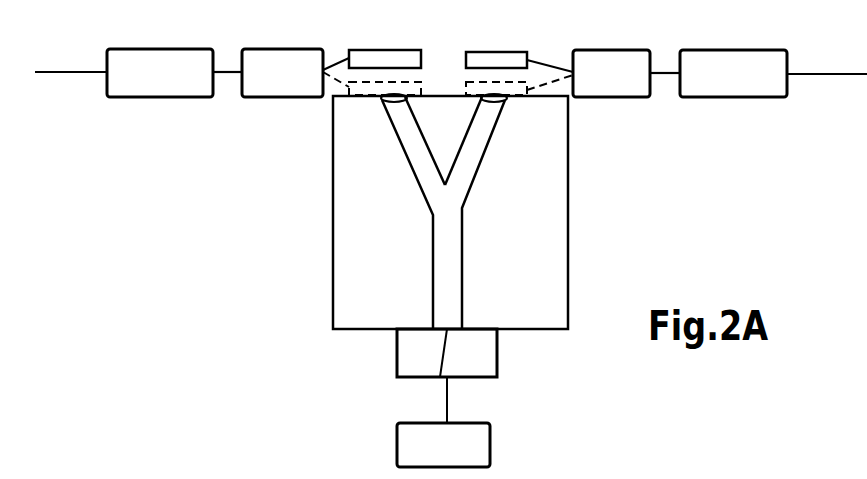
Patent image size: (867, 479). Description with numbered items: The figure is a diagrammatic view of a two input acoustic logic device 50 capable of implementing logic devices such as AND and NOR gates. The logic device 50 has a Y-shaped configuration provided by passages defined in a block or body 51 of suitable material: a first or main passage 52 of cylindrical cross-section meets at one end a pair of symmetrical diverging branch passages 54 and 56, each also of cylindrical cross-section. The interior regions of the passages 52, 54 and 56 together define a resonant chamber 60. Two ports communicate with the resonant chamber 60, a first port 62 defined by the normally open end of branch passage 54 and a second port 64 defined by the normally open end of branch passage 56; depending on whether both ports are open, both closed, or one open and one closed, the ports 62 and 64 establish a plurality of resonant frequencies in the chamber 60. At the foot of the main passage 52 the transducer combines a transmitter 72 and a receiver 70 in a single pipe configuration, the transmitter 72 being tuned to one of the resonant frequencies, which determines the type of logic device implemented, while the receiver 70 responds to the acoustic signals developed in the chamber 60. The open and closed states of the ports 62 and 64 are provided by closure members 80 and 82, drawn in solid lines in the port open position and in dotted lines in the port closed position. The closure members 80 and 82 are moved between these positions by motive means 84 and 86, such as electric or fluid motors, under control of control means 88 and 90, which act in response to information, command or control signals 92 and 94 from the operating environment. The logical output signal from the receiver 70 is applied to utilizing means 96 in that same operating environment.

The logic device 50 is at (202, 250).
The block or body 51 is at (333, 308).
The first or main passage 52 is at (462, 270).
The branch passage 54 is at (408, 162).
The branch passage 56 is at (487, 158).
The resonant chamber 60 is at (450, 213).
The first port 62 is at (387, 103).
The second port 64 is at (505, 100).
The receiver means 70 is at (497, 377).
The transmitter means 72 is at (397, 376).
The closure member 80 is at (384, 88).
The closure member 82 is at (491, 88).
The motive means 84 is at (273, 49).
The motive means 86 is at (613, 49).
The control means 88 is at (140, 49).
The control means 90 is at (718, 50).
The control signal 92 is at (62, 73).
The control signal 94 is at (822, 33).
The utilizing means 96 is at (492, 440).